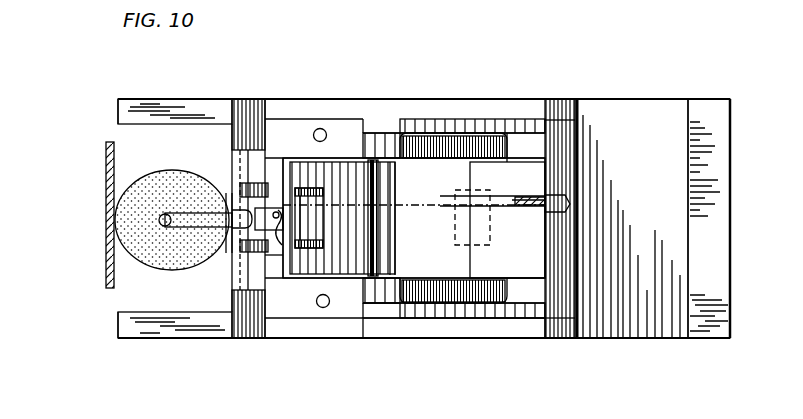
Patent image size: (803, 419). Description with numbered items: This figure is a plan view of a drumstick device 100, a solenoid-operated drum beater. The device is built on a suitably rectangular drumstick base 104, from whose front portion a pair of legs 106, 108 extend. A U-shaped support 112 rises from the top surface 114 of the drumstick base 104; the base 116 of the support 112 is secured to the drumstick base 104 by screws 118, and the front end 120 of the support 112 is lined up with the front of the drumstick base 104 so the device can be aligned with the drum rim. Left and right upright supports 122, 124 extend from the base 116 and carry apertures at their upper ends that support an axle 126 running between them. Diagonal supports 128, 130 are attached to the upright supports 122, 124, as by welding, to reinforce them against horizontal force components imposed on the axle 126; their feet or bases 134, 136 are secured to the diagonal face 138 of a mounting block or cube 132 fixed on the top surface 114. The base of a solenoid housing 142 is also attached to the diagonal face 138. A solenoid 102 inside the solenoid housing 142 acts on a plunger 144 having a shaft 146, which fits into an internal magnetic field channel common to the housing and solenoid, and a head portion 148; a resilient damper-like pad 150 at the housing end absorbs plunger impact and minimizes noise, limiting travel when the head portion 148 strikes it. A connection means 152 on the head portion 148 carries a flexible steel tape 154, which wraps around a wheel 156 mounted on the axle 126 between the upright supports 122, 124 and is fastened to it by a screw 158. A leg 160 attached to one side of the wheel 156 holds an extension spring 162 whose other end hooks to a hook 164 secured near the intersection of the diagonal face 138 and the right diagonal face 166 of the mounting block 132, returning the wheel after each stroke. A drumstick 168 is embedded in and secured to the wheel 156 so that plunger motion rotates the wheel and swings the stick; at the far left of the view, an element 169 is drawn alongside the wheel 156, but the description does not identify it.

The drumstick device 100 is at (558, 348).
The solenoid 102 is at (507, 305).
The drumstick base 104 is at (115, 113).
The leg 106 is at (145, 109).
The leg 108 is at (148, 330).
The U-shaped support 112 is at (228, 143).
The top surface 114 is at (383, 127).
The base of the support 116 is at (304, 138).
The screws 118 is at (300, 127).
The front end of the support 120 is at (240, 262).
The left upright support 122 is at (262, 99).
The right upright support 124 is at (266, 340).
The axle 126 is at (265, 282).
The diagonal support 128 is at (450, 110).
The diagonal support 130 is at (472, 320).
The mounting block or cube 132 is at (652, 97).
The foot or base of diagonal support 134 is at (553, 108).
The foot or base of diagonal support 136 is at (582, 340).
The diagonal face 138 is at (505, 148).
The solenoid housing 142 is at (524, 258).
The plunger 144 is at (463, 190).
The shaft 146 is at (482, 243).
The head portion 148 is at (314, 133).
The damper-like pad 150 is at (370, 232).
The connection means 152 is at (340, 255).
The tape 154 is at (314, 202).
The wheel 156 is at (256, 284).
The screw 158 is at (288, 252).
The leg 160 is at (248, 182).
The extension spring 162 is at (526, 198).
The hook 164 is at (555, 202).
The right diagonal face 166 is at (677, 214).
The drumstick 168 is at (153, 268).
The guide bar 169 is at (106, 210).